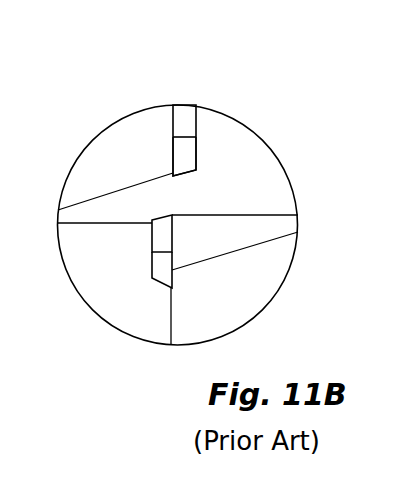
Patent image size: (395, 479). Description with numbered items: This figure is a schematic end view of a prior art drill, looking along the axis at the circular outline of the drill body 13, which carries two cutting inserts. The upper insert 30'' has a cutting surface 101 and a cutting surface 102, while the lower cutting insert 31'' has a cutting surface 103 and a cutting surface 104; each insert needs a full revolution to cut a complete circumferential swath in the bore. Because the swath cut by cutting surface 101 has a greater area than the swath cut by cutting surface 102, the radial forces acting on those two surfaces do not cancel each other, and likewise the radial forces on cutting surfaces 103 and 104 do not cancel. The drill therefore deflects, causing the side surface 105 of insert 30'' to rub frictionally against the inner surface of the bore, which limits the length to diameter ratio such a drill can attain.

The drill body 13 is at (247, 160).
The insert 30'' is at (110, 158).
The cutting insert 31'' is at (166, 280).
The cutting surface 101 is at (192, 122).
The cutting surface 102 is at (187, 167).
The cutting surface 103 is at (175, 232).
The cutting surface 104 is at (160, 270).
The side surface 105 is at (195, 113).